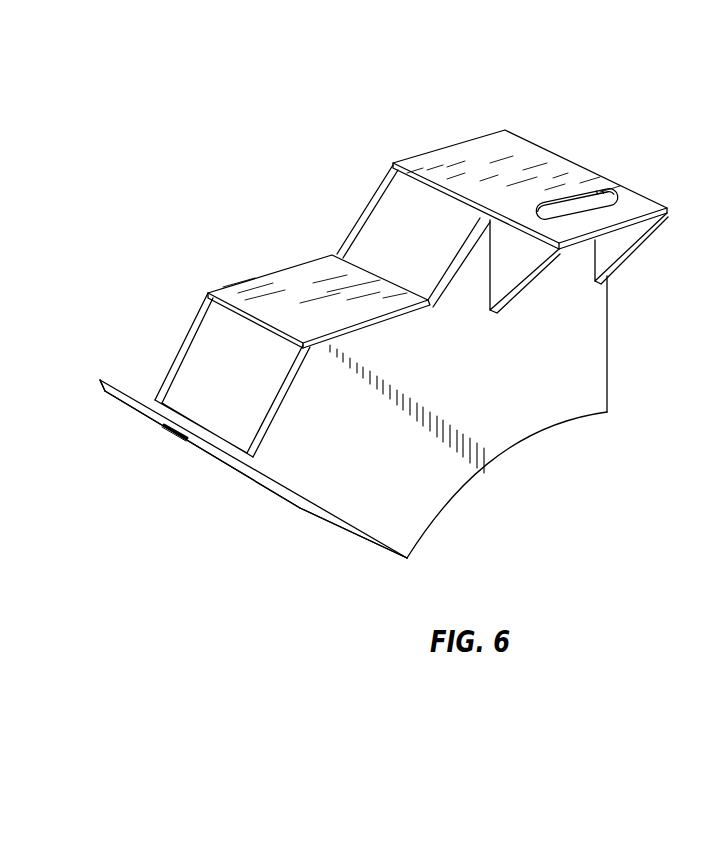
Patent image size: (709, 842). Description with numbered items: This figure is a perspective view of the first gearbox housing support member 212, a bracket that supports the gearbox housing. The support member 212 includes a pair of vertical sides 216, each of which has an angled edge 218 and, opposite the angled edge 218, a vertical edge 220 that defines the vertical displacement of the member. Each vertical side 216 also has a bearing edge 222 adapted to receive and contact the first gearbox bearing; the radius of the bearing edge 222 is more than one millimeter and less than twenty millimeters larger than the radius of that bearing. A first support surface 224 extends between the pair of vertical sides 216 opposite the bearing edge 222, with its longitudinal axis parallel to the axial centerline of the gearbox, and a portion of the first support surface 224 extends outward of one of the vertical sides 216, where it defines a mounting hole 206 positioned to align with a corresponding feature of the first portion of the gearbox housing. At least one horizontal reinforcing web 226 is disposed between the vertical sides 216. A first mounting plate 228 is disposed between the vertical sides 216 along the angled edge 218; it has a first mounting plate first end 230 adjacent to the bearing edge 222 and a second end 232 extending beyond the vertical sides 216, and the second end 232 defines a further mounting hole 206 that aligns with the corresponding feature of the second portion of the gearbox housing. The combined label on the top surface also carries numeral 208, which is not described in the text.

The first gearbox housing support member 212 is at (308, 130).
The mounting portion 208 is at (522, 155).
The first support surface 224 is at (530, 157).
The mounting hole 206 is at (610, 188).
The horizontal reinforcing web 226 is at (287, 278).
The angled edge 218 is at (292, 493).
The second end 232 is at (142, 388).
The first mounting plate 228 is at (260, 485).
The first mounting plate first end 230 is at (338, 528).
The vertical sides 216 is at (577, 382).
The vertical edge 220 is at (607, 306).
The bearing edge 222 is at (500, 453).